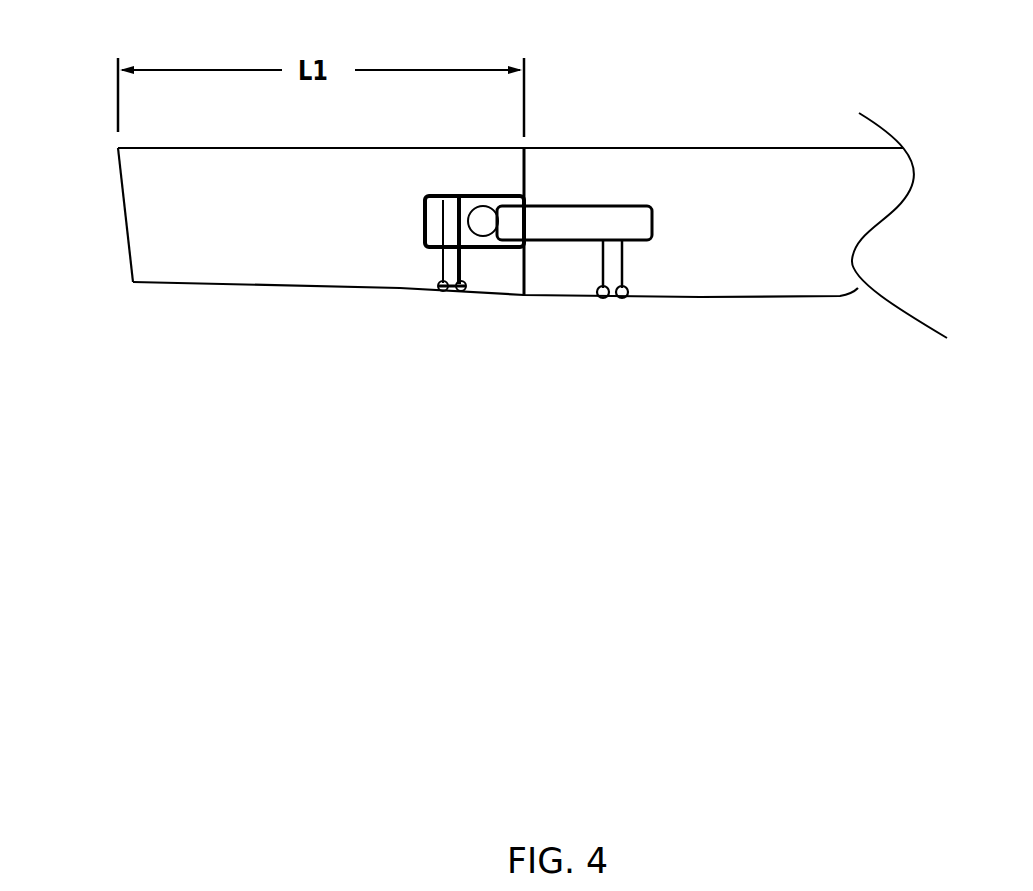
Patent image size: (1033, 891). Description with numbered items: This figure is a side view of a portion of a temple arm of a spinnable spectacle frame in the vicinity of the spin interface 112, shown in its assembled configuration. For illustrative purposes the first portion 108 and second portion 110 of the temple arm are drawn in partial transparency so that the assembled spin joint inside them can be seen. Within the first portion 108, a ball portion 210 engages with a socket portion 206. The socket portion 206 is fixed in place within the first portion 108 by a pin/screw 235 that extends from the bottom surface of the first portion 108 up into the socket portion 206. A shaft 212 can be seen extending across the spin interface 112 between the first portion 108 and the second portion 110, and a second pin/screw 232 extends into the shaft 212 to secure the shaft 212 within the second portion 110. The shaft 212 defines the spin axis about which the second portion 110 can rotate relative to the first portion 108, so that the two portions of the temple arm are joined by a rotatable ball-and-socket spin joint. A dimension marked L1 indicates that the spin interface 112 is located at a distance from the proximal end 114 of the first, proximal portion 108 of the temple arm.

The first portion 108 is at (265, 207).
The second portion 110 is at (692, 195).
The spin interface 112 is at (536, 316).
The proximal end 114 is at (125, 215).
The socket portion 206 is at (425, 202).
The ball portion 210 is at (488, 228).
The shaft 212 is at (564, 223).
The pin/screw 232 is at (610, 262).
The pin/screw 235 is at (447, 260).